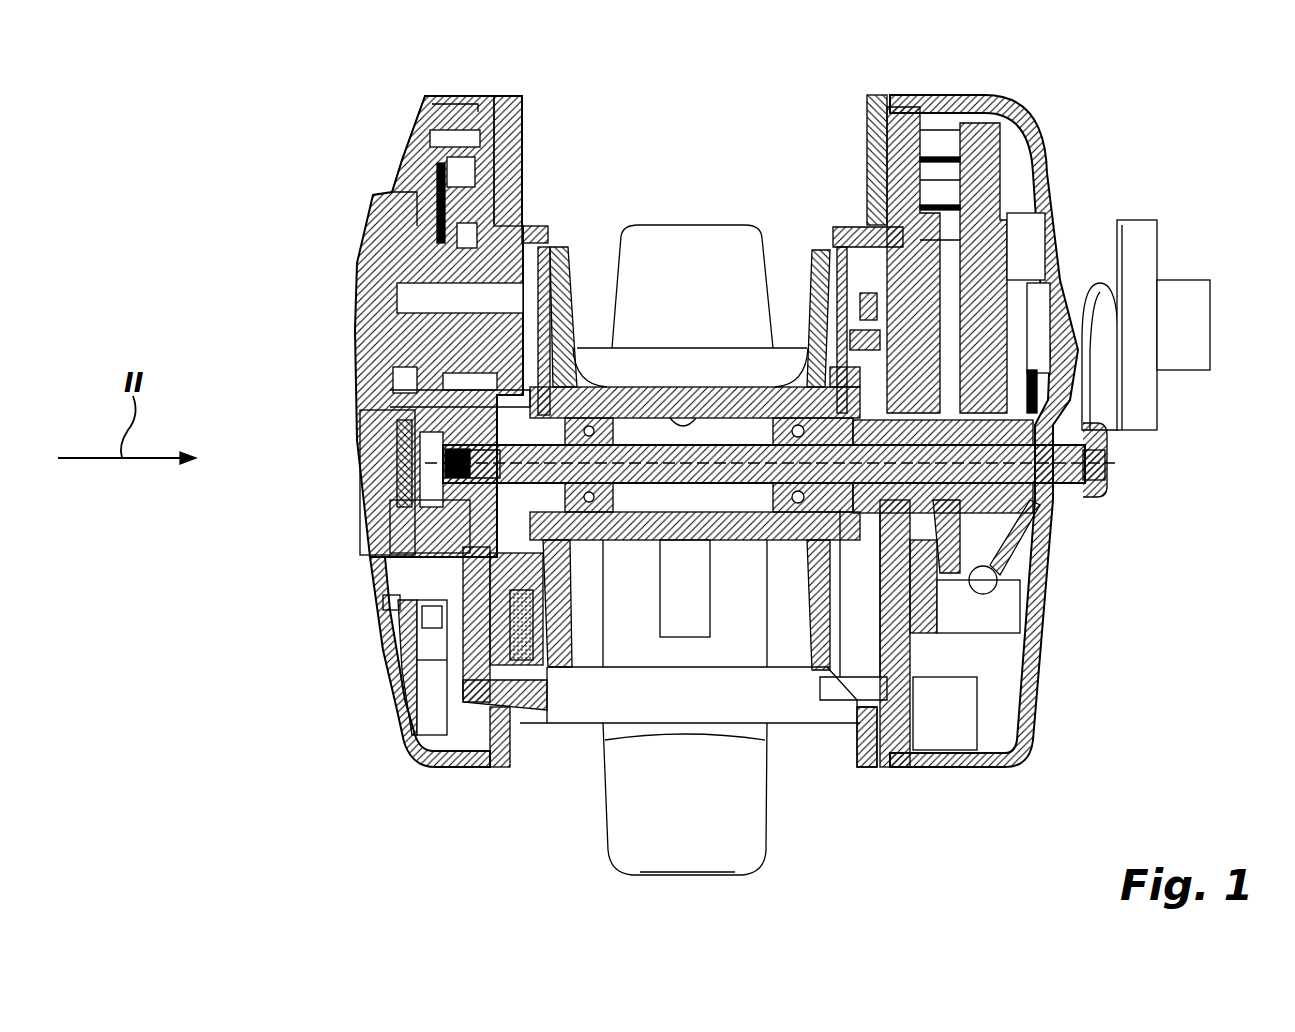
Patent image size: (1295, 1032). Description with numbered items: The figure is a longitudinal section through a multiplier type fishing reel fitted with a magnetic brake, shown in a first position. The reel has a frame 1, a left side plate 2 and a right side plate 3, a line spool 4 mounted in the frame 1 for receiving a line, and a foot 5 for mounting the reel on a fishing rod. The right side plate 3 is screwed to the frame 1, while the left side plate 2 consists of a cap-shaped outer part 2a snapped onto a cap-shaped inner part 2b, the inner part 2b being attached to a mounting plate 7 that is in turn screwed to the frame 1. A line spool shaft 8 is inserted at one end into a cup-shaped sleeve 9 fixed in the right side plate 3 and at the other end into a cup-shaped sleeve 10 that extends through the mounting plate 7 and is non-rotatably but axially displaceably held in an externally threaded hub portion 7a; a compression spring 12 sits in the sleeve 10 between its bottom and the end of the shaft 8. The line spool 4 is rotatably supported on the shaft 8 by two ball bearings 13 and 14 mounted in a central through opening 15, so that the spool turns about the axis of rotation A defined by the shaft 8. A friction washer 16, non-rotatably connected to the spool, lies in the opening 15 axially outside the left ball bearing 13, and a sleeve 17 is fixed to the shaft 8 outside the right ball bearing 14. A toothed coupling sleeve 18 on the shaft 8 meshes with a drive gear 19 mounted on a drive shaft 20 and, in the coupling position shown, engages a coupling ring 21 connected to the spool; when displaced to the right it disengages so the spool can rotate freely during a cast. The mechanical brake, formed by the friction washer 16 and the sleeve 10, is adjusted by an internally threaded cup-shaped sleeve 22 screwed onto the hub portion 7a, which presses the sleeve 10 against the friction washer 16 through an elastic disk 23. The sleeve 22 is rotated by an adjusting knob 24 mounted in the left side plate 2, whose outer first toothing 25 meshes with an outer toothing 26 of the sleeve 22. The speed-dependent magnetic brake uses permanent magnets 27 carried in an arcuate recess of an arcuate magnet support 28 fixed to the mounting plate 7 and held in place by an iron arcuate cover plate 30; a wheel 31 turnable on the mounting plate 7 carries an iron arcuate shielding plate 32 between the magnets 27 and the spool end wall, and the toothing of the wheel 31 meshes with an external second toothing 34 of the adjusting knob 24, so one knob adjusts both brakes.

The frame 1 is at (520, 137).
The left side plate 2 is at (388, 715).
The cap-shaped outer part 2a is at (412, 128).
The cap-shaped inner part 2b is at (455, 97).
The right side plate 3 is at (1003, 250).
The line spool 4 is at (752, 387).
The foot 5 is at (740, 828).
The mounting plate 7 is at (494, 97).
The externally threaded hub portion 7a is at (392, 612).
The line spool shaft 8 is at (690, 540).
The cup-shaped sleeve 9 is at (1100, 482).
The cup-shaped sleeve 10 is at (362, 490).
The compression spring 12 is at (360, 470).
The ball bearing 13 is at (620, 542).
The ball bearing 14 is at (786, 552).
The central through opening 15 is at (684, 425).
The friction washer 16 is at (588, 380).
The sleeve 17 is at (870, 513).
The toothed coupling sleeve 18 is at (1030, 510).
The drive gear 19 is at (1070, 247).
The drive shaft 20 is at (1180, 290).
The coupling ring 21 is at (797, 350).
The cup-shaped sleeve 22 is at (395, 525).
The disk 23 is at (360, 435).
The adjusting knob 24 is at (368, 280).
The outer first toothing 25 is at (397, 180).
The outer toothing 26 is at (405, 572).
The permanent magnets 27 is at (565, 618).
The arcuate magnet support 28 is at (535, 772).
The arcuate cover plate 30 is at (378, 656).
The wheel 31 is at (568, 335).
The arcuate shielding plate 32 is at (567, 643).
The external second toothing 34 is at (532, 232).
The axis of rotation A is at (1110, 463).